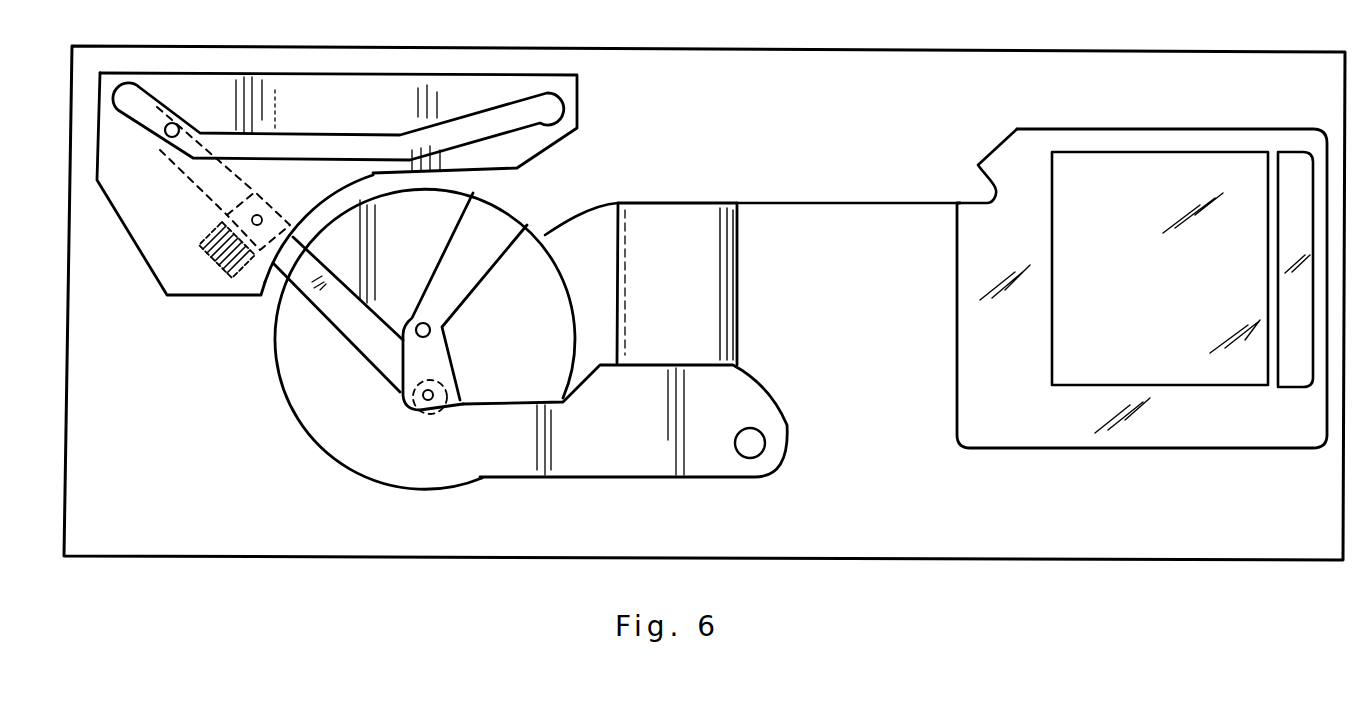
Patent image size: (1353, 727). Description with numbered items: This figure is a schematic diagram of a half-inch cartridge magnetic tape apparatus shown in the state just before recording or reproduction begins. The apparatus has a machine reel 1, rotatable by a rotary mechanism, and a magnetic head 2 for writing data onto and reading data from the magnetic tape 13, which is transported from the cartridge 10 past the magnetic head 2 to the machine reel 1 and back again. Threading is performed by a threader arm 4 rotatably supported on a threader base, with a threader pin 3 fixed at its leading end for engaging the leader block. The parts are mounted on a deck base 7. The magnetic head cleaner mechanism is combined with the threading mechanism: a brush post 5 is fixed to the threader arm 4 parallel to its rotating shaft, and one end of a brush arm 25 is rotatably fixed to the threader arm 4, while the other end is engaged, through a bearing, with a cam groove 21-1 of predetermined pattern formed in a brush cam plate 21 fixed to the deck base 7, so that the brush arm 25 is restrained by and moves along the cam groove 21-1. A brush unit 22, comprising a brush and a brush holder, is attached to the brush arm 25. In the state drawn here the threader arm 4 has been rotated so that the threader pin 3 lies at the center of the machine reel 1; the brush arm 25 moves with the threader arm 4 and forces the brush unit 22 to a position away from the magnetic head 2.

The machine reel 1 is at (327, 437).
The magnetic head 2 is at (707, 325).
The threader pin 3 is at (408, 327).
The threader arm 4 is at (705, 458).
The brush post 5 is at (433, 393).
The deck base 7 is at (1110, 78).
The cartridge 10 is at (1137, 430).
The magnetic tape 13 is at (846, 203).
The brush cam plate 21 is at (372, 102).
The cam groove 21-1 is at (141, 100).
The brush unit 22 is at (213, 267).
The brush arm 25 is at (343, 313).